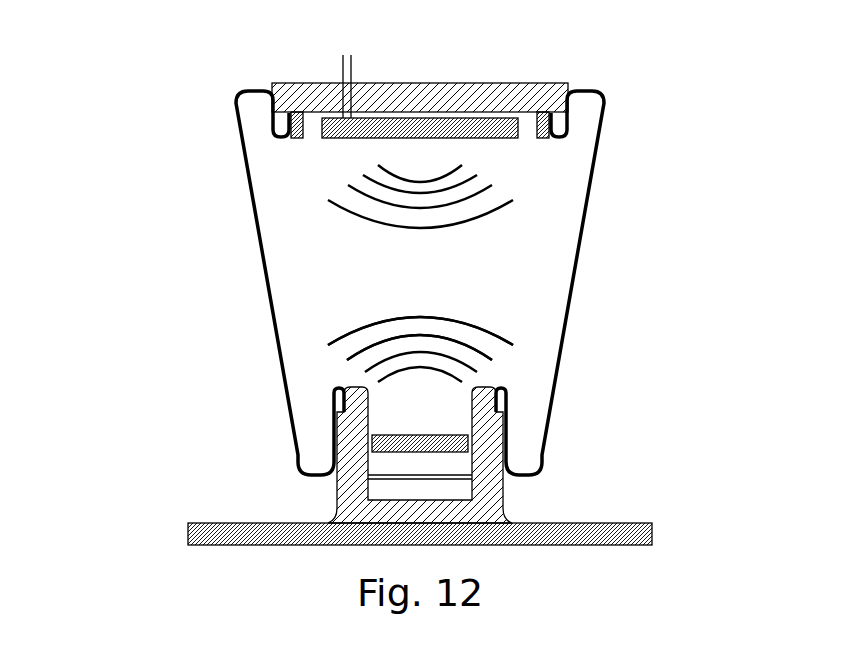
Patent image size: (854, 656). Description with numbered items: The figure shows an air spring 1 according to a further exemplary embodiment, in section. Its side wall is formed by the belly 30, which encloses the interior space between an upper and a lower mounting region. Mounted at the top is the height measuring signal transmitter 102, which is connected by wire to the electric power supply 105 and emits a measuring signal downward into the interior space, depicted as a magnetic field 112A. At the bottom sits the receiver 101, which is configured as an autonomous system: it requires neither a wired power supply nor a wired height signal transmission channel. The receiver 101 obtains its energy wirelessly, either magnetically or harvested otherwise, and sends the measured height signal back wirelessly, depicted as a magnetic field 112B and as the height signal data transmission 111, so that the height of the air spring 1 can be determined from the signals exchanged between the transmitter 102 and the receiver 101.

The air spring 1 is at (118, 192).
The belly 30 is at (270, 310).
The electric power supply 105 is at (350, 70).
The height measuring signal transmitter 102 is at (493, 139).
The first ultrasonic wave 112A is at (492, 187).
The second ultrasonic wave 112B is at (473, 347).
The height signal data transmission 111 is at (376, 333).
The receiver 101 is at (418, 438).